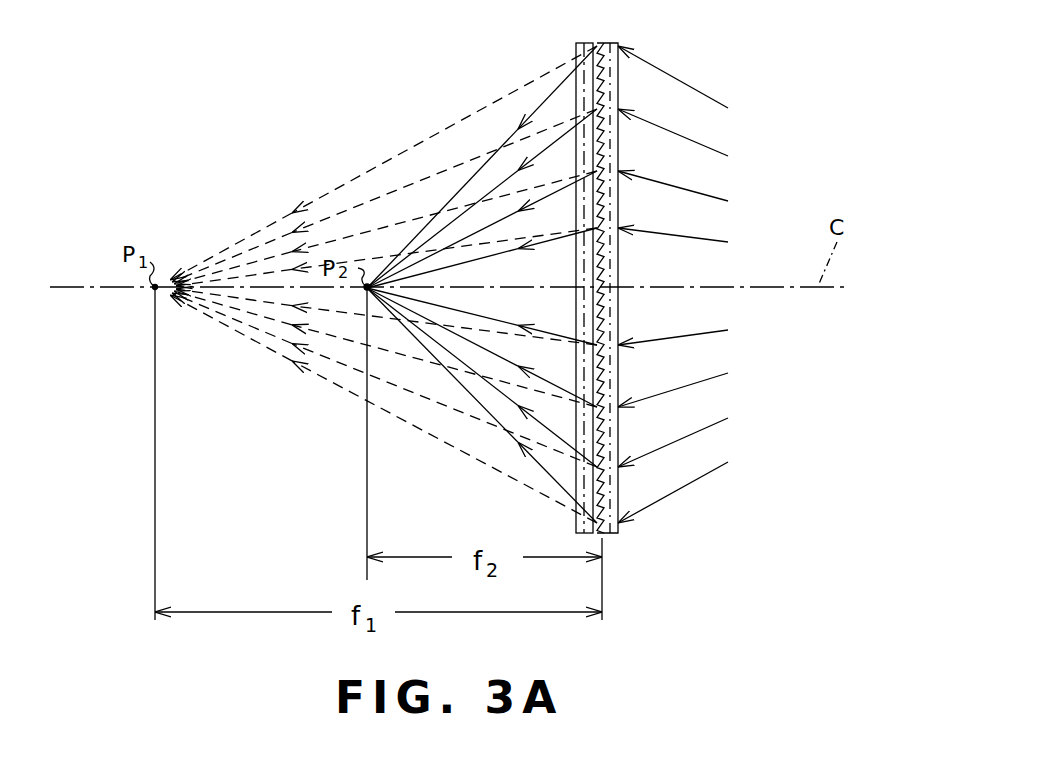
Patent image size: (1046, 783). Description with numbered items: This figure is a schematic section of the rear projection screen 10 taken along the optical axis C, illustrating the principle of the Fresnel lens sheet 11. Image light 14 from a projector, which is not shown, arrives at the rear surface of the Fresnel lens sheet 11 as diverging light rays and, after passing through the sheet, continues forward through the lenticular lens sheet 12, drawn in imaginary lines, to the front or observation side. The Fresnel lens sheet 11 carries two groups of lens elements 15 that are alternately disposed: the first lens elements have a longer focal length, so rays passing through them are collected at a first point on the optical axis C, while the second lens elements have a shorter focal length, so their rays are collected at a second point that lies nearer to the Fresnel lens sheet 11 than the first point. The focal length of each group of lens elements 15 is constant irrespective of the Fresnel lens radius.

The rear projection screen 10 is at (620, 196).
The Fresnel lens sheet 11 is at (618, 43).
The lenticular lens sheet 12 is at (580, 42).
The image light 14 is at (696, 90).
The lens elements 15 is at (598, 268).